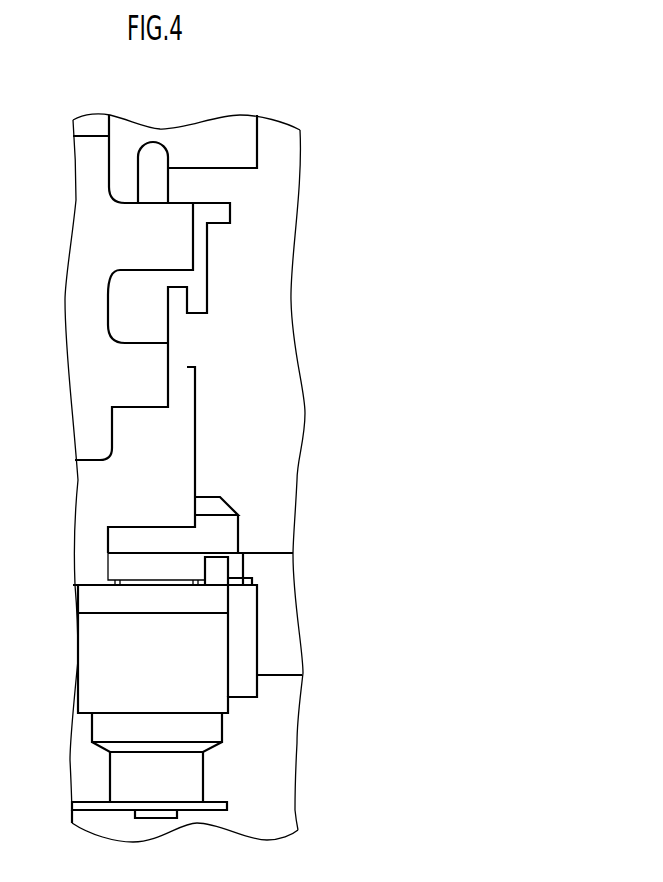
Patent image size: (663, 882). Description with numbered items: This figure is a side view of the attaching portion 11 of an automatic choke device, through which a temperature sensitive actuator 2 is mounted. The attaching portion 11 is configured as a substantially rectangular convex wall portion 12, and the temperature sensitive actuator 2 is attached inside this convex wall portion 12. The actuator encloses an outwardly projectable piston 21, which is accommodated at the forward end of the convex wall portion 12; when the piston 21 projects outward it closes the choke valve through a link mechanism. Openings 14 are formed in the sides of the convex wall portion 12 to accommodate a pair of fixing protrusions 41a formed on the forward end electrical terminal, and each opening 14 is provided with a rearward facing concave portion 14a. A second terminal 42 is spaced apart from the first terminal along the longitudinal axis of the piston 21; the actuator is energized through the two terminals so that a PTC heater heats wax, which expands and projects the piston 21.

The piston 21 is at (145, 178).
The attaching portion 11 is at (205, 377).
The convex wall portion 12 is at (196, 432).
The opening 14 is at (213, 542).
The temperature sensitive actuator 2 is at (253, 531).
The fixing protrusion 41a is at (148, 578).
The concave portion 14a is at (126, 580).
The second terminal 42 is at (90, 818).